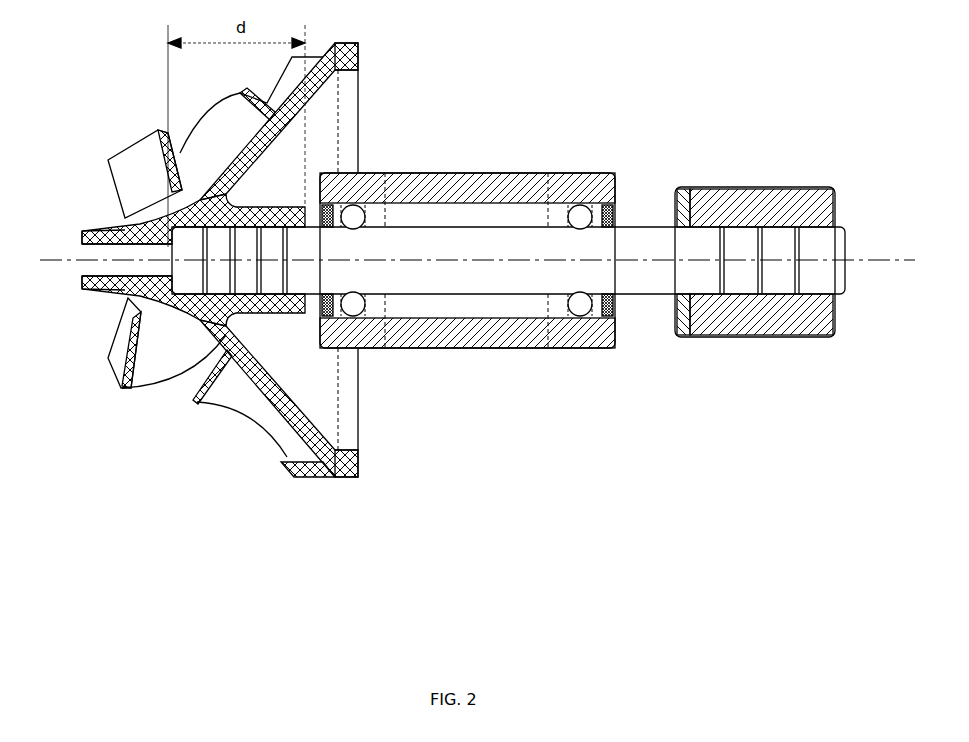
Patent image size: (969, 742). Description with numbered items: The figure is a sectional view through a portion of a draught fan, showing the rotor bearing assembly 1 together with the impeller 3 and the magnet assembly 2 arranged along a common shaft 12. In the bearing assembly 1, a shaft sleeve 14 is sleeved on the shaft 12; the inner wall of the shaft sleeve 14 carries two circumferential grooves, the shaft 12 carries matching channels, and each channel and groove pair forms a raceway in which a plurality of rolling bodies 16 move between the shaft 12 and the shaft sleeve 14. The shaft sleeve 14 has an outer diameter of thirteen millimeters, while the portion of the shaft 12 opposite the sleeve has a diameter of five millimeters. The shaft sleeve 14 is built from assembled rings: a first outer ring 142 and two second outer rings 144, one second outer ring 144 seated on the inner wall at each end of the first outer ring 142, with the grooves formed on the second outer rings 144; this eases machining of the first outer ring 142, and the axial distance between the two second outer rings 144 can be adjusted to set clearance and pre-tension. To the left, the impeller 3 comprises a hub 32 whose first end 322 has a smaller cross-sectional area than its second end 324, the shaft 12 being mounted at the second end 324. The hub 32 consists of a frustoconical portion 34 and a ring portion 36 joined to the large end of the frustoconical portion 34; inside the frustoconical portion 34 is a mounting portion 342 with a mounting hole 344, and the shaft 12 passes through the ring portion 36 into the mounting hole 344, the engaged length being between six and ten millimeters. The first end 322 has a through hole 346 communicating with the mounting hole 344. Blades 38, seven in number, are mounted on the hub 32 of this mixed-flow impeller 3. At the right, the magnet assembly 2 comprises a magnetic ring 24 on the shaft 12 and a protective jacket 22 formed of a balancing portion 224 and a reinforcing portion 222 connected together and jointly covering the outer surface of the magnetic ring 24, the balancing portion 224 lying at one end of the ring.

The bearing assembly 1 is at (467, 344).
The shaft 12 is at (493, 283).
The shaft sleeve 14 is at (386, 334).
The first outer ring 142 is at (445, 350).
The second outer ring 144 is at (385, 350).
The rolling body 16 is at (577, 303).
The magnet assembly 2 is at (508, 326).
The protective jacket 22 is at (745, 308).
The reinforcing portion 222 is at (713, 337).
The balancing portion 224 is at (715, 397).
The magnetic ring 24 is at (750, 337).
The impeller 3 is at (228, 319).
The hub 32 is at (325, 299).
The second end 324 is at (365, 47).
The frustoconical portion 34 is at (285, 417).
The ring portion 36 is at (282, 518).
The blade 38 is at (242, 410).
The first end 322 is at (82, 231).
The mounting portion 342 is at (194, 300).
The mounting hole 344 is at (213, 308).
The through hole 346 is at (112, 262).